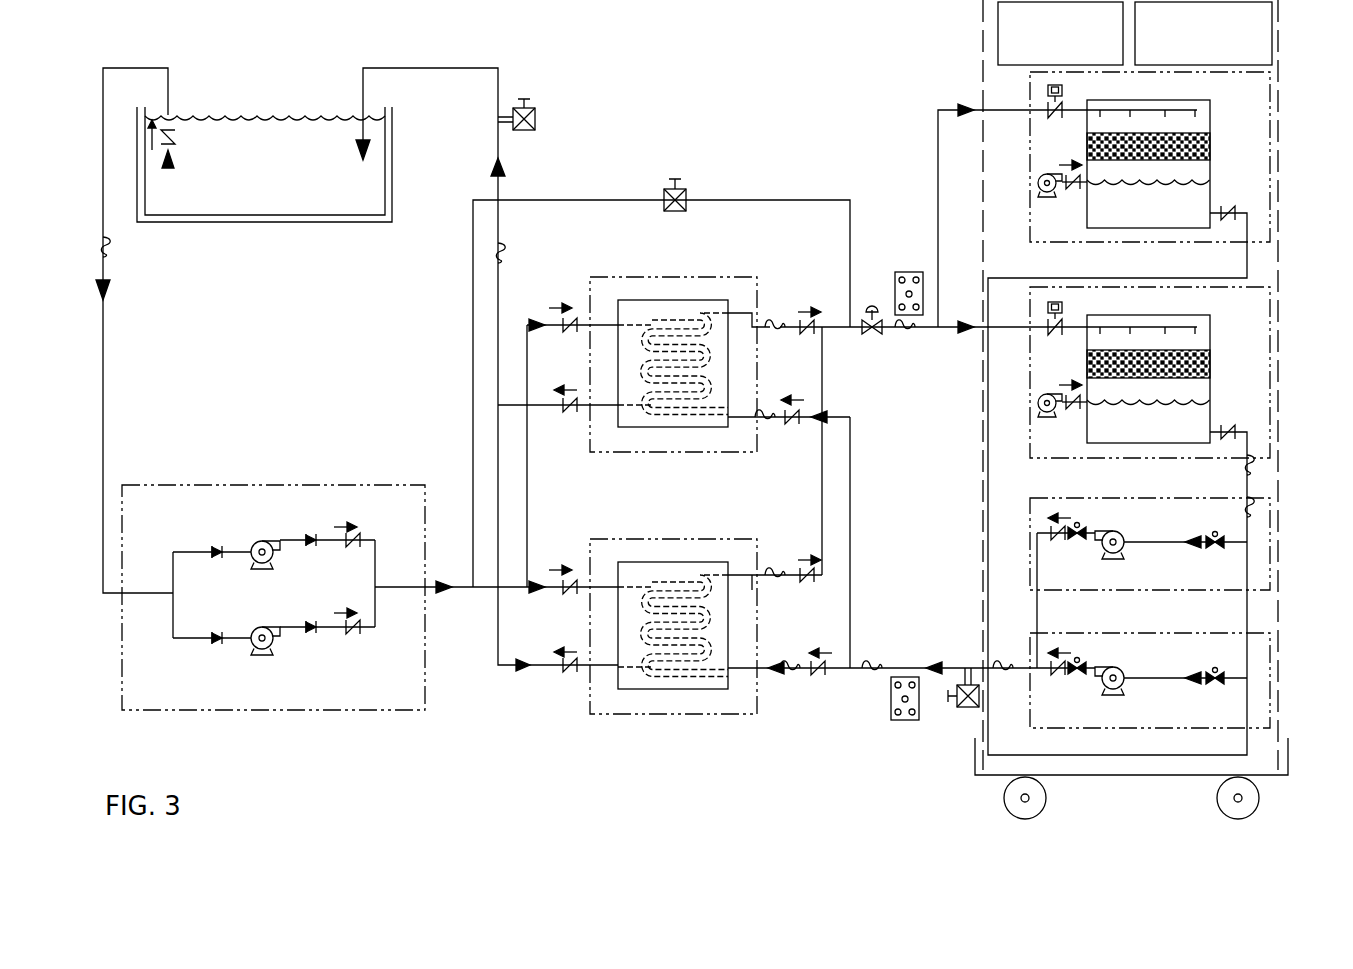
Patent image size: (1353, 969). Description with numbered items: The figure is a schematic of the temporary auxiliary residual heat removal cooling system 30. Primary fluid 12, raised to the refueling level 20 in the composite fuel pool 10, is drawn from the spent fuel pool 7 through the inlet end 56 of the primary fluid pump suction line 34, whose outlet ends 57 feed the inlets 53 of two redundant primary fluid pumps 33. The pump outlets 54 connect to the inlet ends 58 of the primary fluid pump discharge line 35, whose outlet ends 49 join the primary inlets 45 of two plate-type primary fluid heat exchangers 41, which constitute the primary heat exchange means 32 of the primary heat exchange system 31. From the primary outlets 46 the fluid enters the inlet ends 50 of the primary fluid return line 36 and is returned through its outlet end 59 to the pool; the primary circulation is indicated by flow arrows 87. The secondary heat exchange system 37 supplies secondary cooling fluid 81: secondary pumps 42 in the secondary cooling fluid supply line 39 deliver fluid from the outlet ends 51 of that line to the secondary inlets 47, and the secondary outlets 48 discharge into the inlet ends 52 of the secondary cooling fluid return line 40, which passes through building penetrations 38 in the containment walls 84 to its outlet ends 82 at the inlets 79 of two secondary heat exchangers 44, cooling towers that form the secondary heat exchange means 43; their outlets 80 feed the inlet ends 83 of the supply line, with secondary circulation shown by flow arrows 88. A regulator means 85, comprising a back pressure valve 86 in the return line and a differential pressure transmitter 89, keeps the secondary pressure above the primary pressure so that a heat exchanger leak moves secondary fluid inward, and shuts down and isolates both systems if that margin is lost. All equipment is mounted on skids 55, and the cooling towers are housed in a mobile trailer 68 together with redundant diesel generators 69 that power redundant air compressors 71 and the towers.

The spent fuel pool 7 is at (210, 201).
The composite fuel pool 10 is at (289, 106).
The primary fluid 12 is at (346, 201).
The refueling level 20 is at (215, 116).
The cooling system 30 is at (389, 333).
The primary heat exchange system 31 is at (788, 170).
The primary heat exchanger 32 is at (711, 437).
The primary fluid pump 33 is at (262, 568).
The primary fluid pump suction line 34 is at (103, 345).
The primary fluid pump discharge line 35 is at (590, 316).
The primary fluid return line 36 is at (498, 98).
The secondary heat exchange system 37 is at (925, 101).
The building penetrations 38 is at (928, 511).
The secondary cooling fluid supply line 39 is at (846, 412).
The secondary cooling fluid return line 40 is at (765, 327).
The primary fluid heat exchanger 41 is at (700, 300).
The secondary pump 42 is at (1105, 558).
The secondary heat exchange means 43 is at (1215, 126).
The secondary heat exchanger 44 is at (1210, 150).
The primary inlet 45 is at (622, 300).
The primary outlet 46 is at (612, 402).
The secondary inlet 47 is at (742, 414).
The secondary outlet 48 is at (752, 318).
The outlet end of primary fluid pump discharge line 49 is at (612, 327).
The inlet end of primary fluid return line 50 is at (612, 408).
The outlet end of secondary cooling fluid supply line 51 is at (738, 424).
The inlet end of secondary cooling fluid return line 52 is at (735, 318).
The primary fluid pump inlet 53 is at (252, 556).
The primary fluid pump outlet 54 is at (285, 545).
The skid 55 is at (270, 485).
The inlet end of primary fluid pump suction line 56 is at (163, 118).
The outlet end of primary fluid pump suction line 57 is at (256, 545).
The inlet end of primary fluid pump discharge line 58 is at (278, 540).
The outlet end of primary fluid return line 59 is at (376, 140).
The mobile trailer 68 is at (1142, 776).
The diesel generators 69 is at (983, 28).
The air compressors 71 is at (1278, 30).
The secondary cooling fluid inlet 79 is at (1065, 110).
The secondary cooling fluid outlet 80 is at (1222, 210).
The secondary cooling fluid 81 is at (1160, 221).
The outlet end of secondary cooling fluid return line 82 is at (1058, 277).
The inlet end of secondary cooling fluid supply line 83 is at (1236, 213).
The containment walls 84 is at (910, 270).
The regulator means 85 is at (866, 291).
The back pressure valve 86 is at (875, 334).
The flow arrow 87 is at (172, 162).
The flow arrows 88 is at (790, 415).
The differential pressure transmitter 89 is at (688, 186).